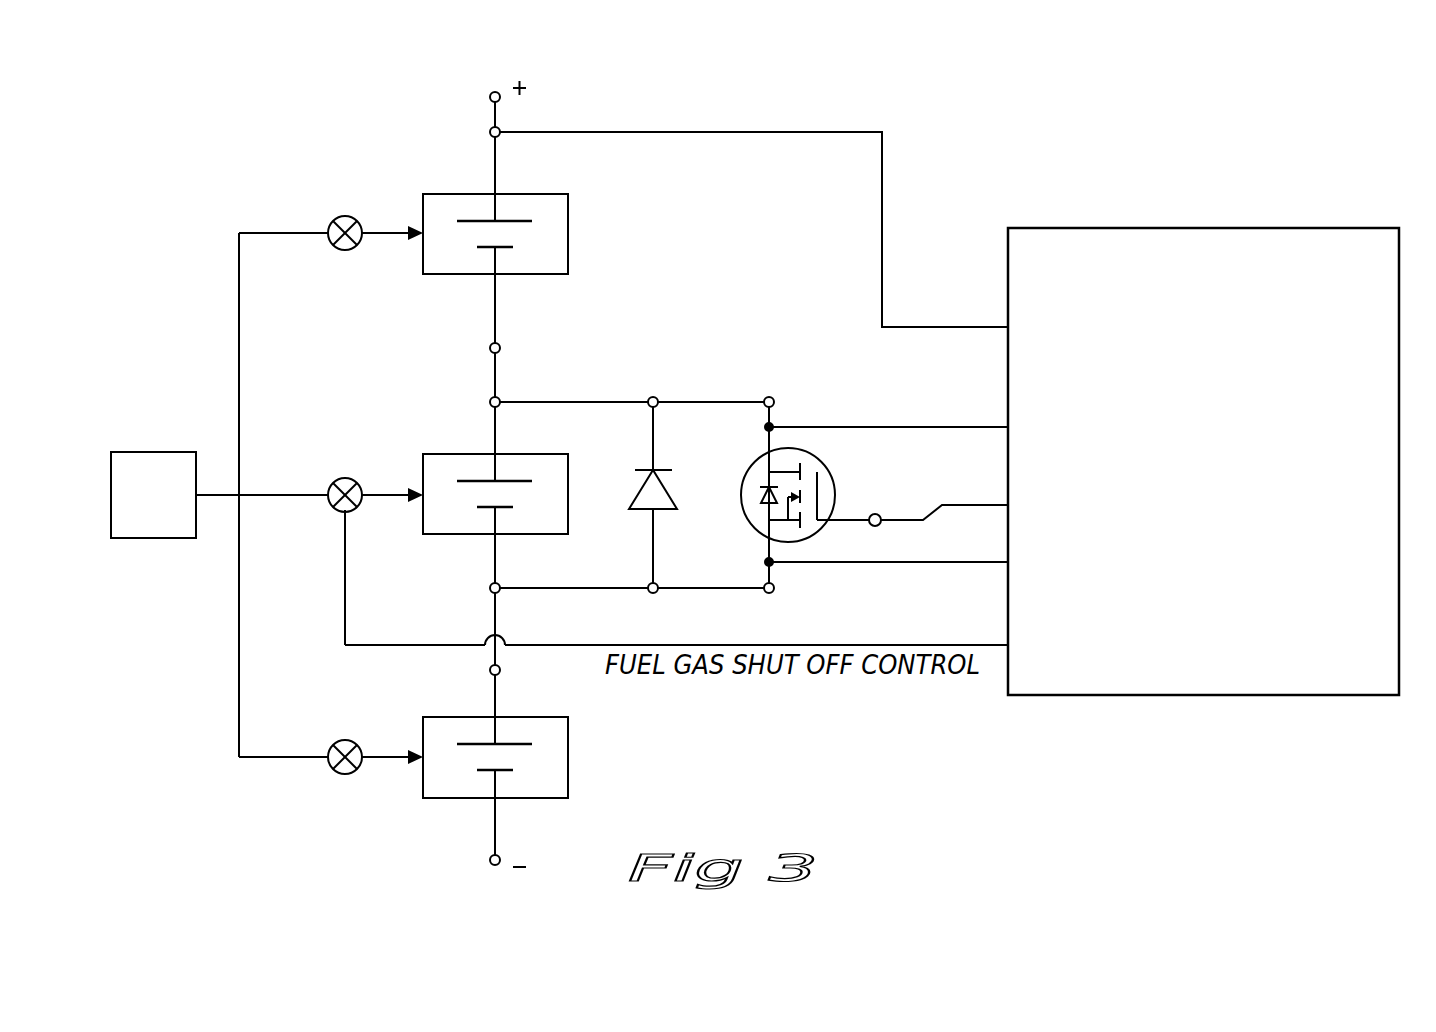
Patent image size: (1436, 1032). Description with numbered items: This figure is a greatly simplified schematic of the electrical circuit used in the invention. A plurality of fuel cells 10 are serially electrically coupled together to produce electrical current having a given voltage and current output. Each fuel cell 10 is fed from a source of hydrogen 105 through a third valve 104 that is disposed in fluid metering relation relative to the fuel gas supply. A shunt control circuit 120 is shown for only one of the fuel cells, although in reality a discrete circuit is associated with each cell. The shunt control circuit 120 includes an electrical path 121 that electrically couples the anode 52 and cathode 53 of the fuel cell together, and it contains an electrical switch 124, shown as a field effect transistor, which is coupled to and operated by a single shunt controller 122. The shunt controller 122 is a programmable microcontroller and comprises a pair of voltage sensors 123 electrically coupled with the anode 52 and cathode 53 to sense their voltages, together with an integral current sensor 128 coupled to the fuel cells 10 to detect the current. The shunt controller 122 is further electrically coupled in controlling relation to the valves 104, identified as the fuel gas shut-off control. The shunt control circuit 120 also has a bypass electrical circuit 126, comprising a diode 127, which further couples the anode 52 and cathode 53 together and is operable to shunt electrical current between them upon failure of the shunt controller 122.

The fuel cell 10 is at (450, 162).
The anode 52 is at (503, 250).
The cathode 53 is at (516, 218).
The third valve 104 is at (345, 216).
The source of hydrogen 105 is at (155, 452).
The shunt control circuit 120 is at (725, 352).
The electrical path 121 is at (615, 399).
The shunt controller 122 is at (1152, 697).
The voltage sensors 123 is at (1007, 427).
The electrical switch 124 is at (830, 468).
The bypass electrical circuit 126 is at (655, 444).
The diode 127 is at (660, 493).
The current sensor 128 is at (1007, 327).